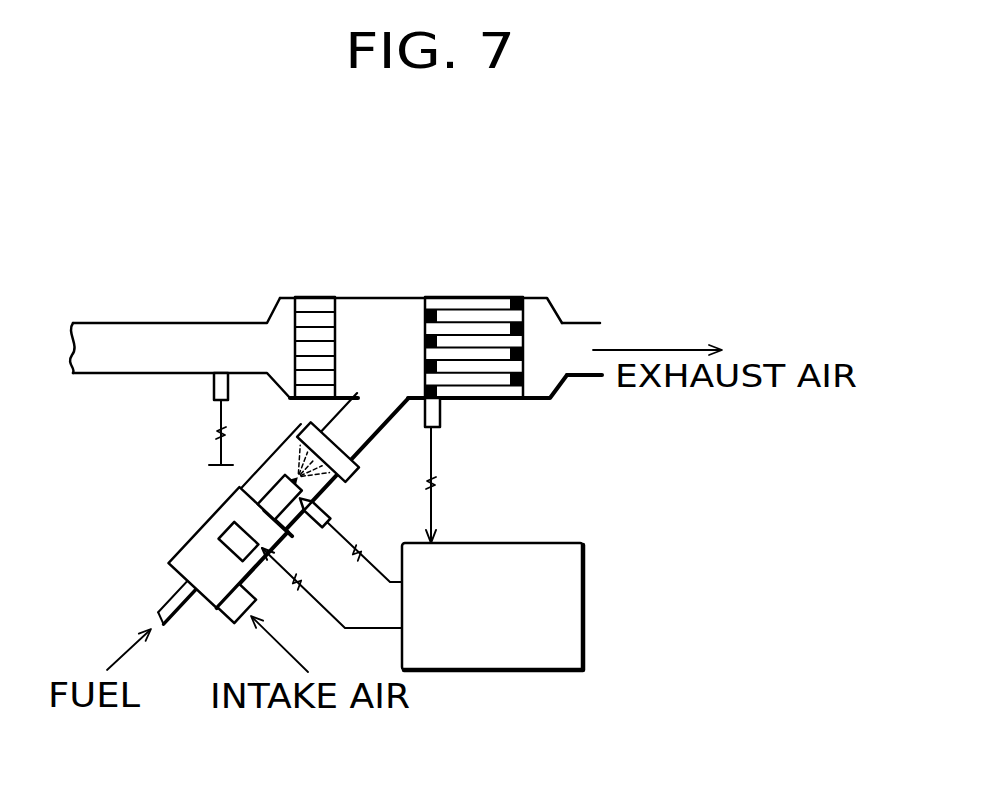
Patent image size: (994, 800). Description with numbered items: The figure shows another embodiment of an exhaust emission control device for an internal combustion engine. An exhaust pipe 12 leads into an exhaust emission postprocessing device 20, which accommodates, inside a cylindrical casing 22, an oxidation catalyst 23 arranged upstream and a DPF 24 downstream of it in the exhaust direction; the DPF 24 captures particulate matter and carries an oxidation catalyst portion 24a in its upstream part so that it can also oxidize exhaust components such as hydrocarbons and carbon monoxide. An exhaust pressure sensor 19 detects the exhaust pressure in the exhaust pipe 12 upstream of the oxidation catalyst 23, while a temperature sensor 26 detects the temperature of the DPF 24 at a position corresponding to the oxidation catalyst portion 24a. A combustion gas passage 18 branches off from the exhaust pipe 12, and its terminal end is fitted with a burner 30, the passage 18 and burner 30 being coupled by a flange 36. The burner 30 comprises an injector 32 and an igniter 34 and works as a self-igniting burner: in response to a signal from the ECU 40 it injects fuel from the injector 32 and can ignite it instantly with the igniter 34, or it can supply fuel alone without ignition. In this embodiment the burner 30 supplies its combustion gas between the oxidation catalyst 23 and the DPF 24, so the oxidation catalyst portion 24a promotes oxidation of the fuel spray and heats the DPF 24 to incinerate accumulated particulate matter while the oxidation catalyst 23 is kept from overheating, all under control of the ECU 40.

The exhaust pipe 12 is at (128, 345).
The combustion gas passage 18 is at (372, 413).
The exhaust pressure sensor 19 is at (213, 388).
The exhaust emission postprocessing device 20 is at (385, 296).
The cylindrical casing 22 is at (549, 297).
The oxidation catalyst 23 is at (315, 298).
The DPF (diesel particulate filter) 24 is at (488, 298).
The oxidation catalyst portion 24a is at (433, 298).
The temperature sensor 26 is at (440, 410).
The burner 30 is at (215, 507).
The injector 32 is at (240, 537).
The igniter 34 is at (327, 510).
The flange 36 is at (323, 428).
The ECU (electrical control unit) 40 is at (565, 572).